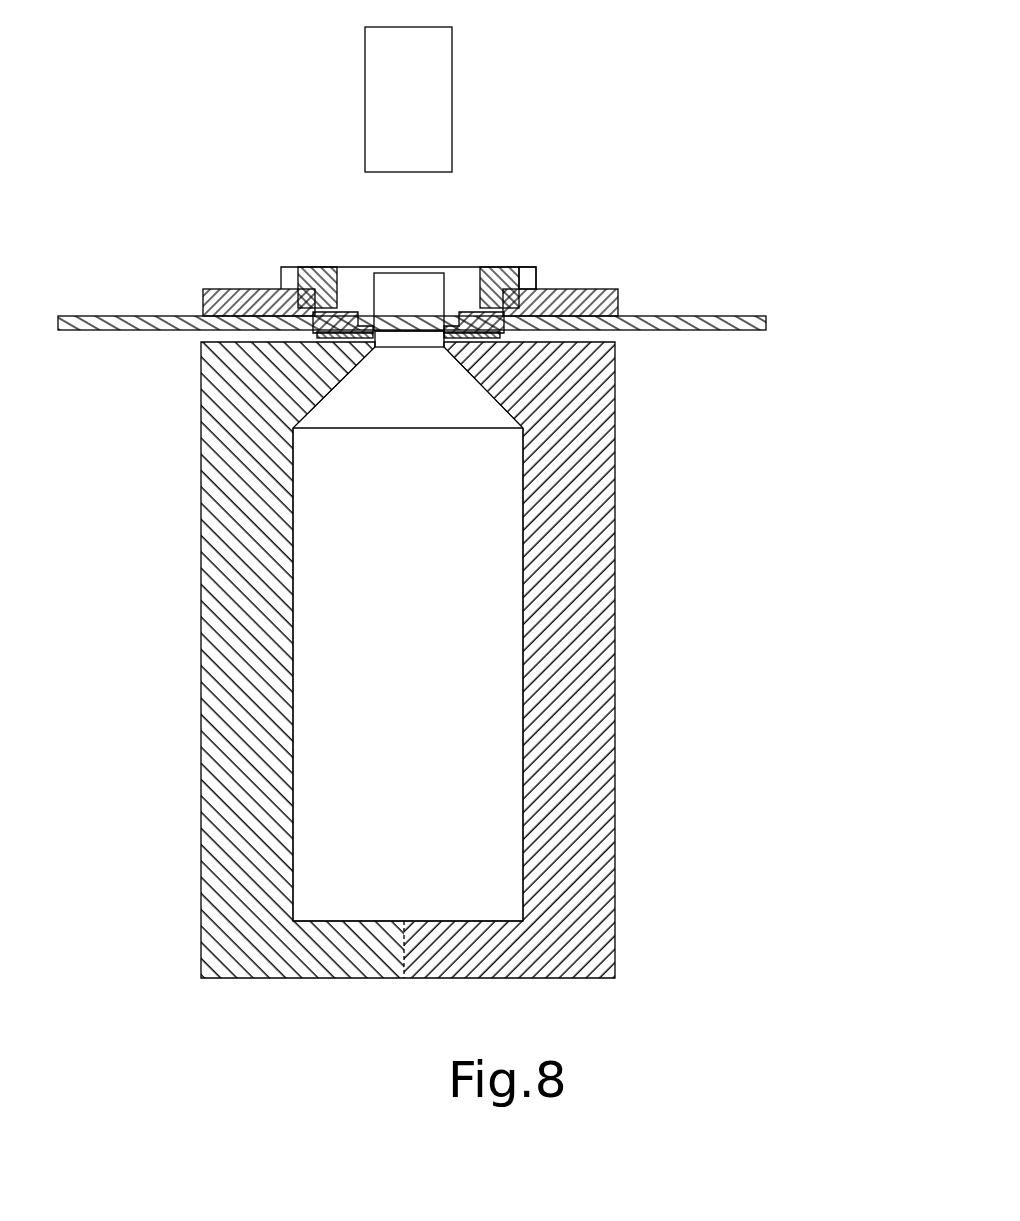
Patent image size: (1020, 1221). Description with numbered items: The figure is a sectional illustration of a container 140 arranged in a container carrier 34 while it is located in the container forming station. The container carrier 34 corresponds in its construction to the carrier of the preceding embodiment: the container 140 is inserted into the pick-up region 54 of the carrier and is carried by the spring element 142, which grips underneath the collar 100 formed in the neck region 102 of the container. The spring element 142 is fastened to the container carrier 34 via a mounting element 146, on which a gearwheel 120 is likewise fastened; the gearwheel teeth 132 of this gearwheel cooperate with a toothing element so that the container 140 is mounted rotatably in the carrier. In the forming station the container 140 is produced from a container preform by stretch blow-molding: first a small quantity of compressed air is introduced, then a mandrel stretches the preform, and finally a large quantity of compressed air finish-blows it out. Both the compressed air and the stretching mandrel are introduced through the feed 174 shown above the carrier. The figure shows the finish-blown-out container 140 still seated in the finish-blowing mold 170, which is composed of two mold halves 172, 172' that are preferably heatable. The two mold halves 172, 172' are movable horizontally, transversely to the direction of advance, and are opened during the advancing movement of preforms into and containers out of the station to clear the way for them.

The feed 174 is at (452, 99).
The collar 100 is at (367, 327).
The neck region 102 is at (445, 295).
The pick-up region 54 is at (466, 284).
The gearwheel 120 is at (511, 260).
The mounting element 146 is at (536, 283).
The gearwheel teeth 132 is at (619, 297).
The container carrier 34 is at (738, 317).
The spring element 142 is at (500, 334).
The container 140 is at (477, 735).
The mold half 172 is at (578, 660).
The mold half 172' is at (253, 694).
The finish-blowing mold 170 is at (401, 1000).